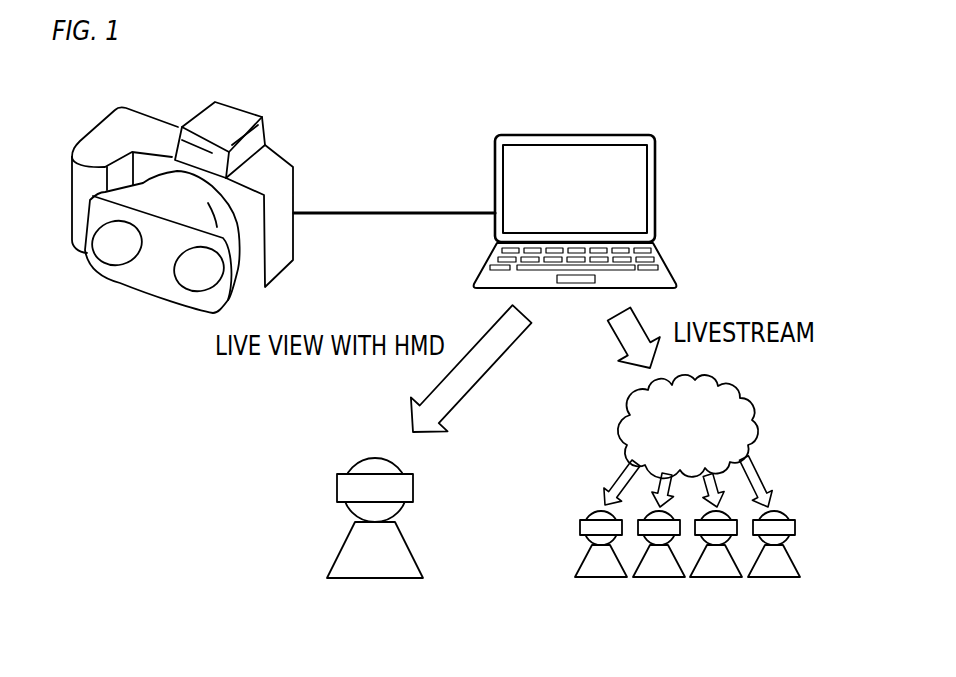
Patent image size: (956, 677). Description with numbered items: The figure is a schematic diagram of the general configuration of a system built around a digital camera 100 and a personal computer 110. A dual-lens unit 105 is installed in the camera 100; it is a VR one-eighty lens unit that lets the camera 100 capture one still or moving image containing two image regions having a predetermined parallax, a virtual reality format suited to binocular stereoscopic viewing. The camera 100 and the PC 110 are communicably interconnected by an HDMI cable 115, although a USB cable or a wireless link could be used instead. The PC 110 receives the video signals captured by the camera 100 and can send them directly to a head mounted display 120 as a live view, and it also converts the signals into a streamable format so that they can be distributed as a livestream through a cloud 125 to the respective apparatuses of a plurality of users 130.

The digital camera 100 is at (112, 130).
The dual-lens unit 105 is at (147, 275).
The personal computer 110 is at (530, 135).
The HDMI cable 115 is at (397, 210).
The head mounted display 120 is at (417, 490).
The cloud 125 is at (757, 415).
The users 130 is at (715, 577).